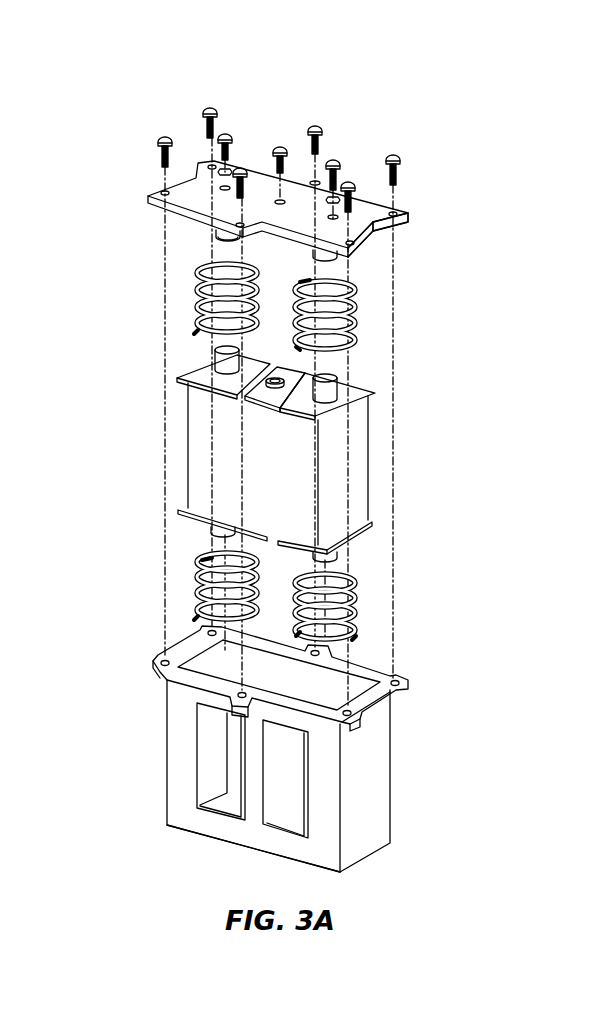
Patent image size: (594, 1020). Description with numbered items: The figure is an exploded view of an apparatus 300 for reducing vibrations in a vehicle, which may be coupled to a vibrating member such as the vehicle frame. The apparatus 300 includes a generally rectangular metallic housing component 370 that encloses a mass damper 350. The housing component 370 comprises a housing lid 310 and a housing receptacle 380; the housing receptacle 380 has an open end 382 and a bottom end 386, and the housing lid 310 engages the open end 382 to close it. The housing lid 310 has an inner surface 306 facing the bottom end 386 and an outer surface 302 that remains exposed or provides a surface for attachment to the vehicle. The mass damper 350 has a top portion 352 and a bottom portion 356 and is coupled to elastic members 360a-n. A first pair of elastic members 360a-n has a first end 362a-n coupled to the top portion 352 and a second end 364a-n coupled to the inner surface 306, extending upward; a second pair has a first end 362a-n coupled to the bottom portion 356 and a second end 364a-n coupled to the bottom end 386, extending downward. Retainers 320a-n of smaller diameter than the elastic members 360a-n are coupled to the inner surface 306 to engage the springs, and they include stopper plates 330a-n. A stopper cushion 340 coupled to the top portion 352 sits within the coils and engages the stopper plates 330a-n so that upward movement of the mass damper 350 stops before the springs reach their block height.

The apparatus 300 is at (457, 141).
The outer surface 302 is at (303, 197).
The inner surface 306 is at (355, 247).
The housing lid 310 is at (378, 226).
The retainers 320a-n is at (227, 231).
The stopper plates 330a-n is at (226, 238).
The stopper cushion 340 is at (198, 371).
The mass damper 350 is at (340, 466).
The top portion 352 is at (262, 390).
The bottom portion 356 is at (200, 532).
The elastic members 360a-n is at (207, 266).
The first end 362a-n is at (347, 283).
The second end 364a-n is at (347, 352).
The housing component 370 is at (410, 216).
The housing receptacle 380 is at (186, 808).
The open end 382 is at (215, 664).
The bottom end 386 is at (323, 853).